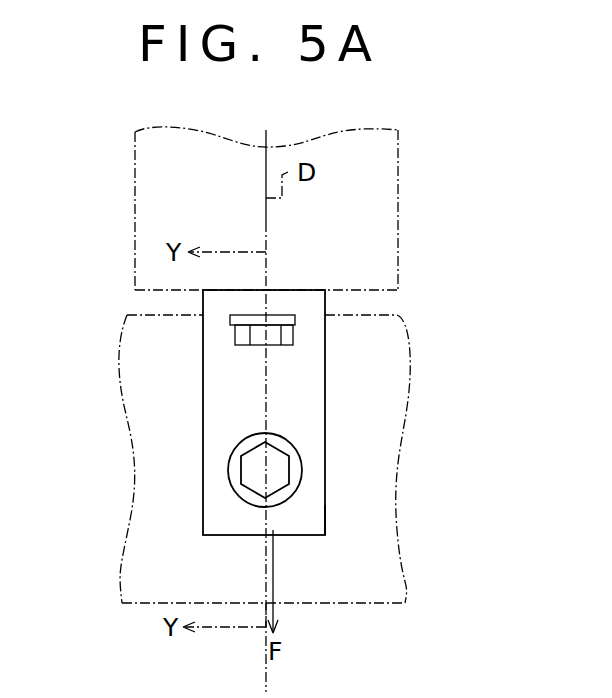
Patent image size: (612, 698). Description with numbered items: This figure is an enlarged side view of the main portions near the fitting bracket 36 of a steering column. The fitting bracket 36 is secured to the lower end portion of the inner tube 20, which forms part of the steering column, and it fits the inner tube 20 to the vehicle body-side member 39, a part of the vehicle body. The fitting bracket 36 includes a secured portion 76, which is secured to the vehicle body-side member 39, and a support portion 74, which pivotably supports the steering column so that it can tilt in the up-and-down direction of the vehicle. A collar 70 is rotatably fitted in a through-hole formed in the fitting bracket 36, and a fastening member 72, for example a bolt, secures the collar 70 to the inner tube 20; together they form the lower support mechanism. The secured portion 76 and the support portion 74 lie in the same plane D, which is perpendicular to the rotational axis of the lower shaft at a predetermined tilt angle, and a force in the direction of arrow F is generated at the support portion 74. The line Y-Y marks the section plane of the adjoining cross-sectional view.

The vehicle body-side member 39 is at (398, 228).
The inner tube 20 is at (397, 311).
The fitting bracket 36 is at (325, 395).
The secured portion 76 is at (222, 333).
The collar 70 is at (293, 452).
The fastening member 72 is at (290, 482).
The support portion 74 is at (313, 517).